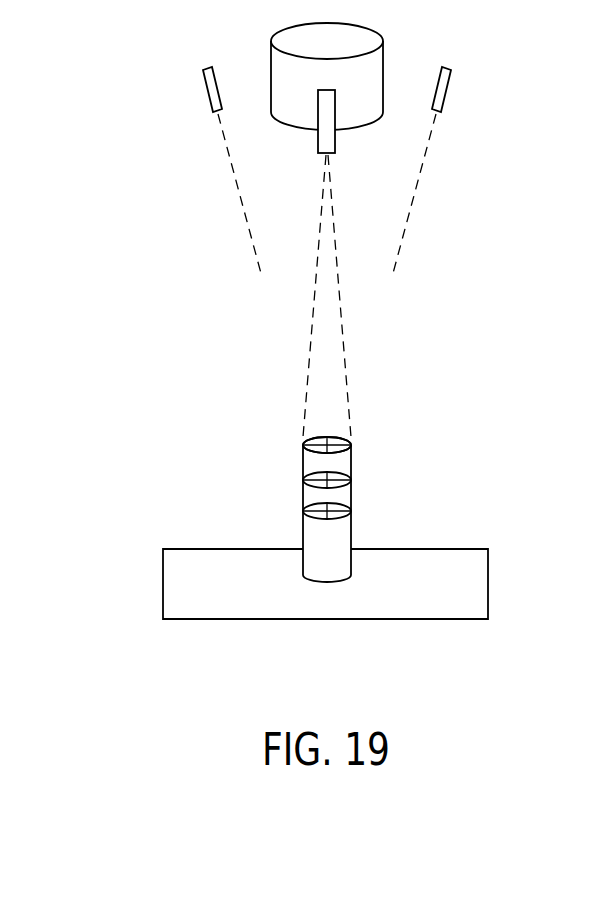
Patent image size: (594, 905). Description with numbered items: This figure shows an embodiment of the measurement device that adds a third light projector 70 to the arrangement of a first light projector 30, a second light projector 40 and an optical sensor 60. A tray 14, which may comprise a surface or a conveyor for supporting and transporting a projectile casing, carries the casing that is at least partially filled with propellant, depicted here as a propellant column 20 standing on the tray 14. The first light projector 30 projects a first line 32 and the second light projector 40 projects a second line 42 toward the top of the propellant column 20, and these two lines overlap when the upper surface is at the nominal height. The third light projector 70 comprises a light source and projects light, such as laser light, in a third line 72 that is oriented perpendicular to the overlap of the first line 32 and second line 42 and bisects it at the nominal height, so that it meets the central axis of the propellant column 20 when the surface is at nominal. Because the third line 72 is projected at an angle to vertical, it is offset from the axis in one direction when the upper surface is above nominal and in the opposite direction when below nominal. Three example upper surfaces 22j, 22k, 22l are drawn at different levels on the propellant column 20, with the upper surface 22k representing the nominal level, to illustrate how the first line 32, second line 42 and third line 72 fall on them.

The tray 14 is at (485, 602).
The propellant column 20 is at (306, 565).
The upper surface 22j is at (278, 438).
The upper surface 22k is at (293, 479).
The upper surface 22l is at (293, 511).
The first light projector 30 is at (208, 92).
The first line 32 is at (222, 234).
The second light projector 40 is at (446, 91).
The second line 42 is at (433, 233).
The optical sensor 60 is at (296, 129).
The third light projector 70 is at (337, 145).
The third line 72 is at (345, 443).